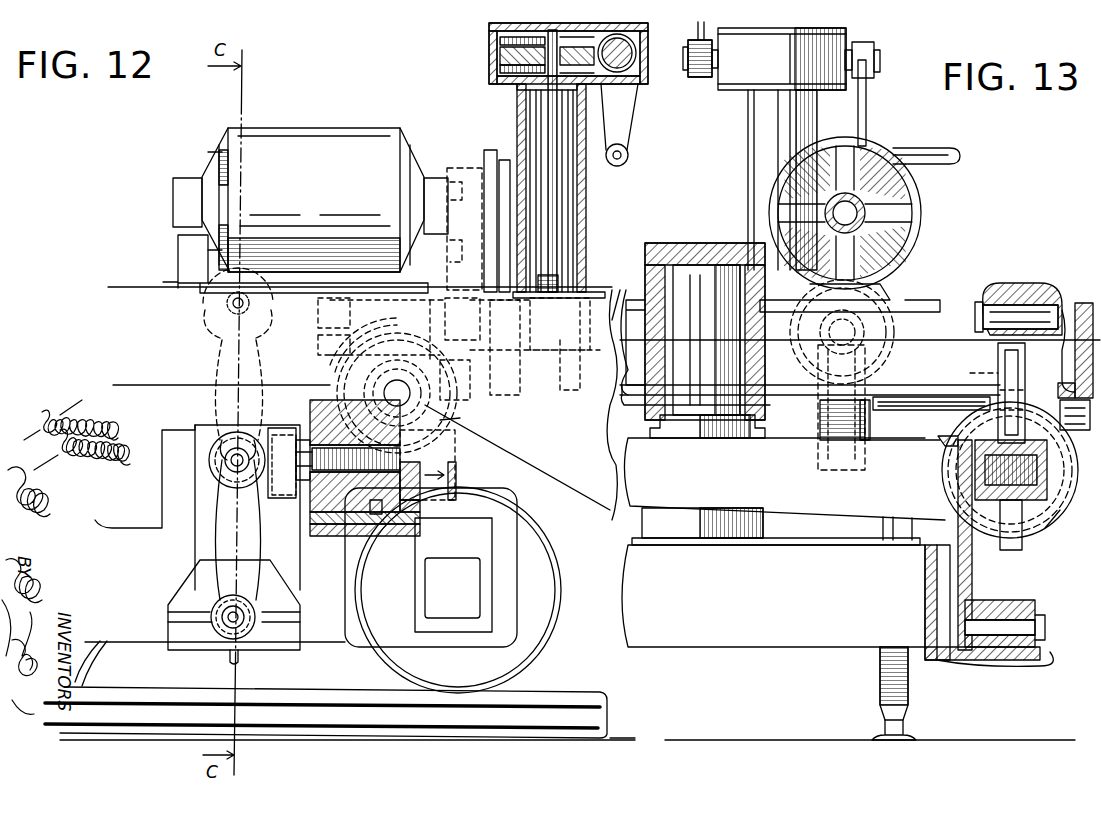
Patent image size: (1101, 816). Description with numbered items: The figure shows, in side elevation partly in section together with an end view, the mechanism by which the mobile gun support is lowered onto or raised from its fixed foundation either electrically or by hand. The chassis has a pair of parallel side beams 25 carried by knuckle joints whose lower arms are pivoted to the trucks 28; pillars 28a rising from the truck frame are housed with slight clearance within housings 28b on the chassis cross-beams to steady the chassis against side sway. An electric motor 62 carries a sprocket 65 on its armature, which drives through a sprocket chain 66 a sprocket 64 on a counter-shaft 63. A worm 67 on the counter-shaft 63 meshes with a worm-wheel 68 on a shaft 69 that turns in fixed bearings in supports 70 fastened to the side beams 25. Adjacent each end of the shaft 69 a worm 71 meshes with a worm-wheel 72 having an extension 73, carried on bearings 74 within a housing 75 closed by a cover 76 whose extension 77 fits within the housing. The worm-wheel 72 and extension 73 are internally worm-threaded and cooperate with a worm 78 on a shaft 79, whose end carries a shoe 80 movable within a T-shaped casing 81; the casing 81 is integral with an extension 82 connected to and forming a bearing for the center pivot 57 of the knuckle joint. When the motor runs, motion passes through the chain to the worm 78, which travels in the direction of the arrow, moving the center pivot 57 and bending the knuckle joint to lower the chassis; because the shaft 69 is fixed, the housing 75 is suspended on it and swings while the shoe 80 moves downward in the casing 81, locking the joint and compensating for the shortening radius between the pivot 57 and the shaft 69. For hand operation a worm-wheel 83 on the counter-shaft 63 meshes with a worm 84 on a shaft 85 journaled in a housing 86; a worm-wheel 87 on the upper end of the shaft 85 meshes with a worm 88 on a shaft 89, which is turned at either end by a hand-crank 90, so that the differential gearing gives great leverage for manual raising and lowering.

In FIG. 12, the side beams 25 is at (362, 403).
In FIG. 12, the trucks 28 is at (340, 653).
In FIG. 13, the trucks 28 is at (842, 589).
In FIG. 13, the pillars 28a is at (695, 265).
In FIG. 13, the housings 28b is at (668, 243).
In FIG. 12, the center pivot 57 is at (228, 460).
In FIG. 13, the center pivot 57 is at (985, 470).
In FIG. 12, the electric motor 62 is at (305, 210).
In FIG. 13, the electric motor 62 is at (923, 228).
In FIG. 12, the counter-shaft 63 is at (318, 325).
In FIG. 12, the sprocket 64 is at (476, 386).
In FIG. 12, the sprocket 65 is at (472, 165).
In FIG. 12, the sprocket chain 66 is at (460, 252).
In FIG. 12, the worm 67 is at (397, 393).
In FIG. 13, the worm 67 is at (841, 407).
In FIG. 12, the worm-wheel 68 is at (335, 370).
In FIG. 12, the shaft 69 is at (400, 396).
In FIG. 13, the shaft 69 is at (920, 410).
In FIG. 12, the supports 70 is at (455, 428).
In FIG. 13, the supports 70 is at (1087, 430).
In FIG. 13, the worm 71 is at (1010, 385).
In FIG. 12, the worm-wheel 72 is at (400, 538).
In FIG. 12, the extension 73 is at (372, 528).
In FIG. 12, the bearings 74 is at (430, 512).
In FIG. 12, the housing 75 is at (425, 530).
In FIG. 13, the housing 75 is at (1045, 528).
In FIG. 12, the cover 76 is at (320, 520).
In FIG. 12, the extension 77 is at (385, 536).
In FIG. 12, the worm 78 is at (456, 466).
In FIG. 12, the shaft 79 is at (302, 440).
In FIG. 12, the shoe 80 is at (280, 430).
In FIG. 12, the casing 81 is at (265, 500).
In FIG. 12, the extension 82 is at (240, 488).
In FIG. 12, the worm-wheel 83 is at (562, 270).
In FIG. 12, the worm 84 is at (623, 289).
In FIG. 12, the shaft 85 is at (558, 212).
In FIG. 12, the housing 86 is at (540, 25).
In FIG. 12, the worm-wheel 87 is at (500, 58).
In FIG. 12, the worm 88 is at (636, 55).
In FIG. 13, the shaft 89 is at (712, 82).
In FIG. 13, the hand-crank 90 is at (868, 104).